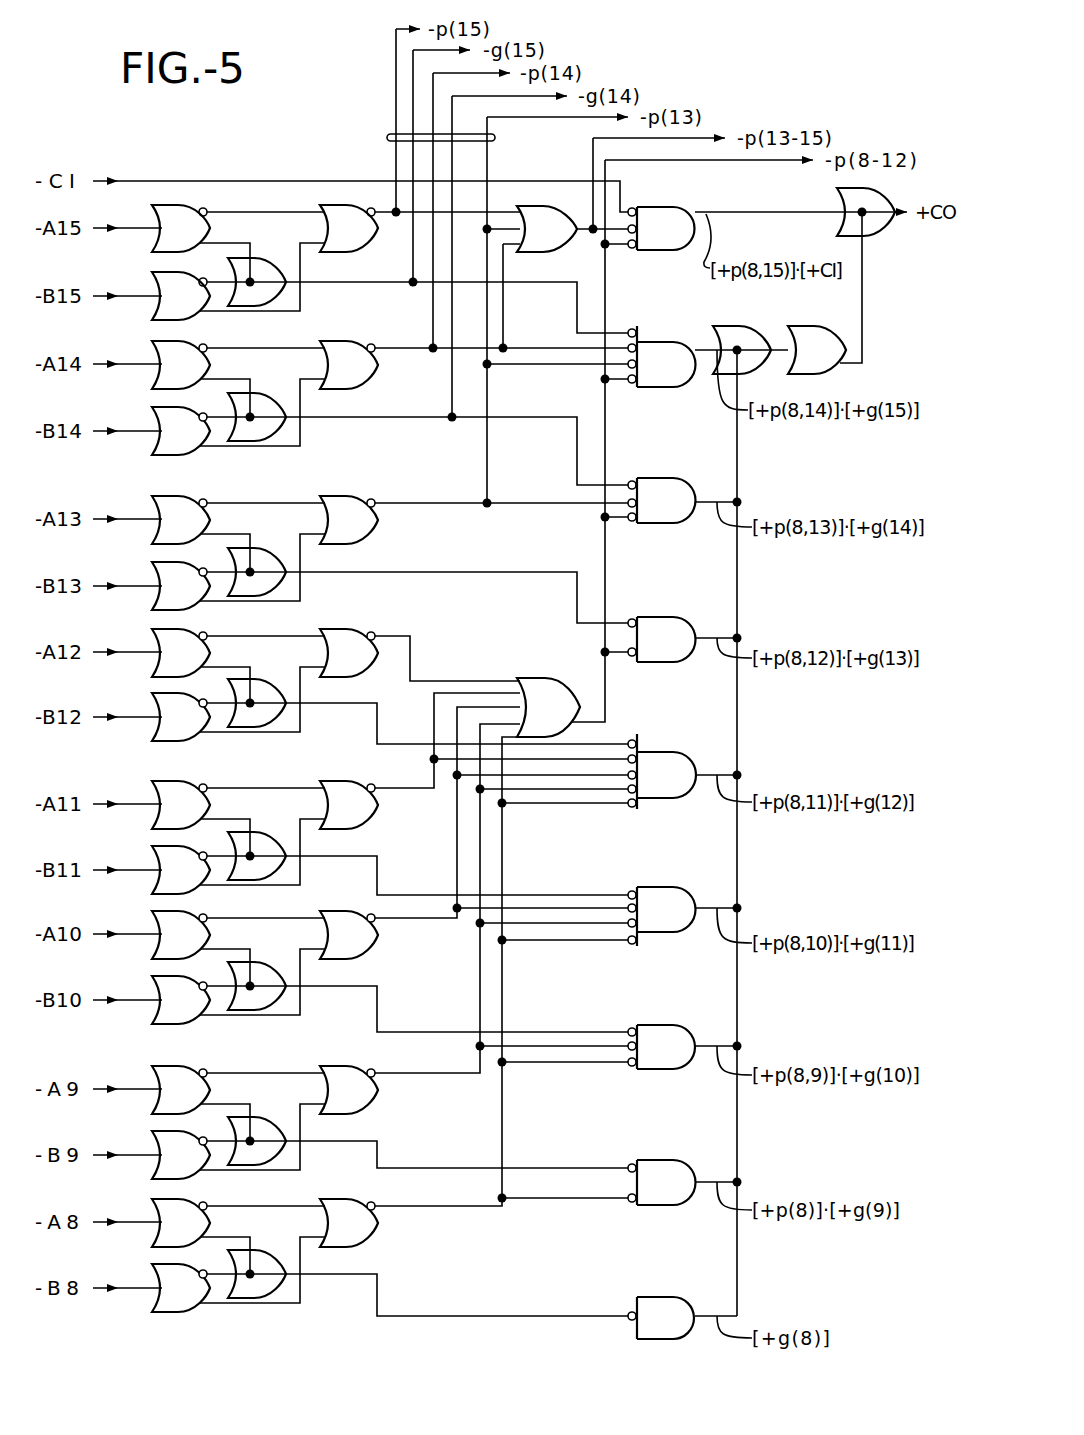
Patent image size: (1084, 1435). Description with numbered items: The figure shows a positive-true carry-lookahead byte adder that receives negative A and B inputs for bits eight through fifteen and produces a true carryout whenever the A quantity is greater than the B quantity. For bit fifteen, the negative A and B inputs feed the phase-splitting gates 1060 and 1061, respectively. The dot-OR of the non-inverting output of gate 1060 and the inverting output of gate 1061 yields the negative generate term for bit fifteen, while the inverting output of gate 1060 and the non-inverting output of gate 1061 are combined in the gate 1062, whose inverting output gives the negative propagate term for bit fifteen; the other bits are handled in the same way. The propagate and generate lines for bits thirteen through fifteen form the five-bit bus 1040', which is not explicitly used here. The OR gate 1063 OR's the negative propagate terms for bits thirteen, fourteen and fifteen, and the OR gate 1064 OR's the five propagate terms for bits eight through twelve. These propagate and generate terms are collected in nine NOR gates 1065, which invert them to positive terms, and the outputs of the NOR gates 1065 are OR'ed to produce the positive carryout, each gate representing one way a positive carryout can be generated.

The phase-splitting gate 1060 is at (188, 209).
The phase-splitting gate 1061 is at (193, 311).
The gate 1062 is at (337, 251).
The OR gate 1063 is at (532, 252).
The OR gate 1064 is at (552, 700).
The NOR gates 1065 is at (676, 250).
The 5-bit bus 1040' is at (382, 138).